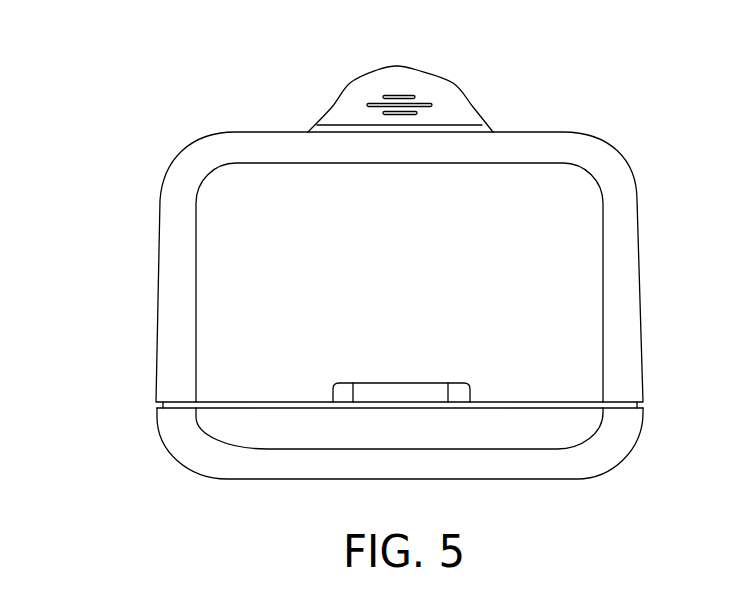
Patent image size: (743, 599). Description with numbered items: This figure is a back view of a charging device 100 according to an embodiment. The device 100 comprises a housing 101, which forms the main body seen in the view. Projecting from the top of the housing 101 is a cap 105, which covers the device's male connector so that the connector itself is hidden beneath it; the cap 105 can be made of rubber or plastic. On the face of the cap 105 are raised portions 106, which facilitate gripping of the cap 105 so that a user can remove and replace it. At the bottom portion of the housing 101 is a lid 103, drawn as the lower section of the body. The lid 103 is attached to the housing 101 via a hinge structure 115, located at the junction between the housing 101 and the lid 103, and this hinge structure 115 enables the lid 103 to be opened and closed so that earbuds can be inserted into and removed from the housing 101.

The device 100 is at (150, 103).
The housing 101 is at (644, 256).
The lid 103 is at (641, 433).
The cap 105 is at (468, 101).
The raised portions 106 is at (400, 95).
The hinge structure 115 is at (415, 383).